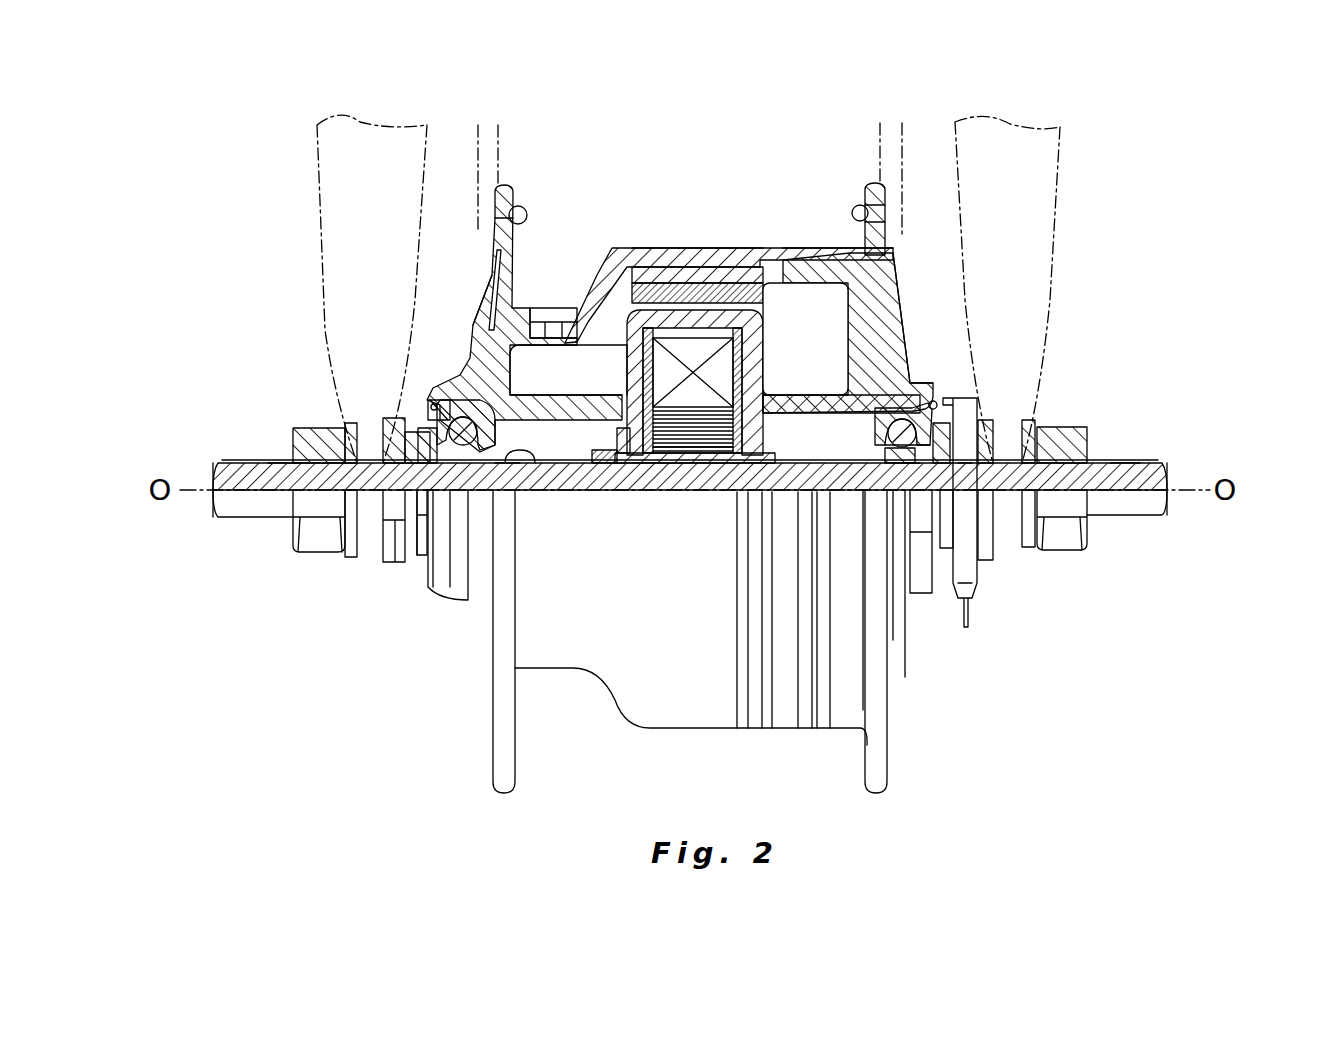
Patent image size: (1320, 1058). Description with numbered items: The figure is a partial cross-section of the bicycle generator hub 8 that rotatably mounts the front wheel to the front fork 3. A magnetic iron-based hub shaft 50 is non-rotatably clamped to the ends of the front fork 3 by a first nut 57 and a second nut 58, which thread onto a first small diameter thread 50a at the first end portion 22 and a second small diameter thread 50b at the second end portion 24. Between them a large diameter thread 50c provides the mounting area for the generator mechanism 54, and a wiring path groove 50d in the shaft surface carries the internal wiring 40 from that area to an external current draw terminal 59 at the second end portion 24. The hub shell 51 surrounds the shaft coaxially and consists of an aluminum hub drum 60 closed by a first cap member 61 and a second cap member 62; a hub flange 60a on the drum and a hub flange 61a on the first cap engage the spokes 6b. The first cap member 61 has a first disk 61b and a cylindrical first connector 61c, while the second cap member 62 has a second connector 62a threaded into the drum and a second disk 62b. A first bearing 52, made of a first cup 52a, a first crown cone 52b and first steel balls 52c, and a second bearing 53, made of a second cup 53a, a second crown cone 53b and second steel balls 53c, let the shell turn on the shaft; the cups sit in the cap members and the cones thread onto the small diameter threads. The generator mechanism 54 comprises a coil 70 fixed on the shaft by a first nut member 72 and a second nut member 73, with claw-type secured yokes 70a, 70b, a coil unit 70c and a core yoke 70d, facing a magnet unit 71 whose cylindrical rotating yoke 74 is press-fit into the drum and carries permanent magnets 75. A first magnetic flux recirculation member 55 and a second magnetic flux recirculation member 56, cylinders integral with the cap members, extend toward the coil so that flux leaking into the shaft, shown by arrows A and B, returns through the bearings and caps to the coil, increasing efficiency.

The front fork 3 is at (317, 187).
The spokes 6b is at (478, 140).
The bicycle generator hub 8 is at (655, 745).
The first end portion 22 is at (198, 437).
The second end portion 24 is at (1218, 437).
The internal wiring 40 is at (755, 480).
The hub shaft 50 is at (248, 462).
The first small diameter thread 50a is at (300, 462).
The second small diameter thread 50b is at (1135, 462).
The large diameter thread 50c is at (510, 492).
The wiring path groove 50d is at (905, 463).
The hub shell 51 is at (842, 244).
The first bearing 52 is at (445, 428).
The first cup 52a is at (442, 423).
The first crown cone 52b is at (445, 470).
The first steel balls 52c is at (412, 466).
The second bearing 53 is at (930, 420).
The second cup 53a is at (938, 390).
The second crown cone 53b is at (972, 492).
The second steel balls 53c is at (925, 492).
The generator mechanism 54 is at (702, 493).
The first magnetic flux recirculation member 55 is at (577, 473).
The second magnetic flux recirculation member 56 is at (935, 492).
The first nut 57 is at (322, 548).
The second nut 58 is at (1065, 552).
The external current draw terminal 59 is at (972, 540).
The hub drum 60 is at (660, 246).
The hub flange 60a is at (880, 192).
The first cap member 61 is at (522, 255).
The hub flange 61a is at (520, 200).
The first disk 61b is at (490, 285).
The cylindrical first connector 61c is at (543, 310).
The second cap member 62 is at (846, 332).
The second connector 62a is at (887, 250).
The second disk 62b is at (895, 340).
The coil 70 is at (632, 310).
The first secured yoke 70a is at (625, 365).
The second secured yoke 70b is at (765, 370).
The coil unit 70c is at (680, 465).
The core yoke 70d is at (690, 470).
The magnet unit 71 is at (712, 262).
The first nut member 72 is at (592, 470).
The second nut member 73 is at (780, 500).
The cylindrical rotating yoke 74 is at (700, 246).
The permanent magnets 75 is at (777, 260).
The arrow A is at (480, 490).
The arrow B is at (902, 492).